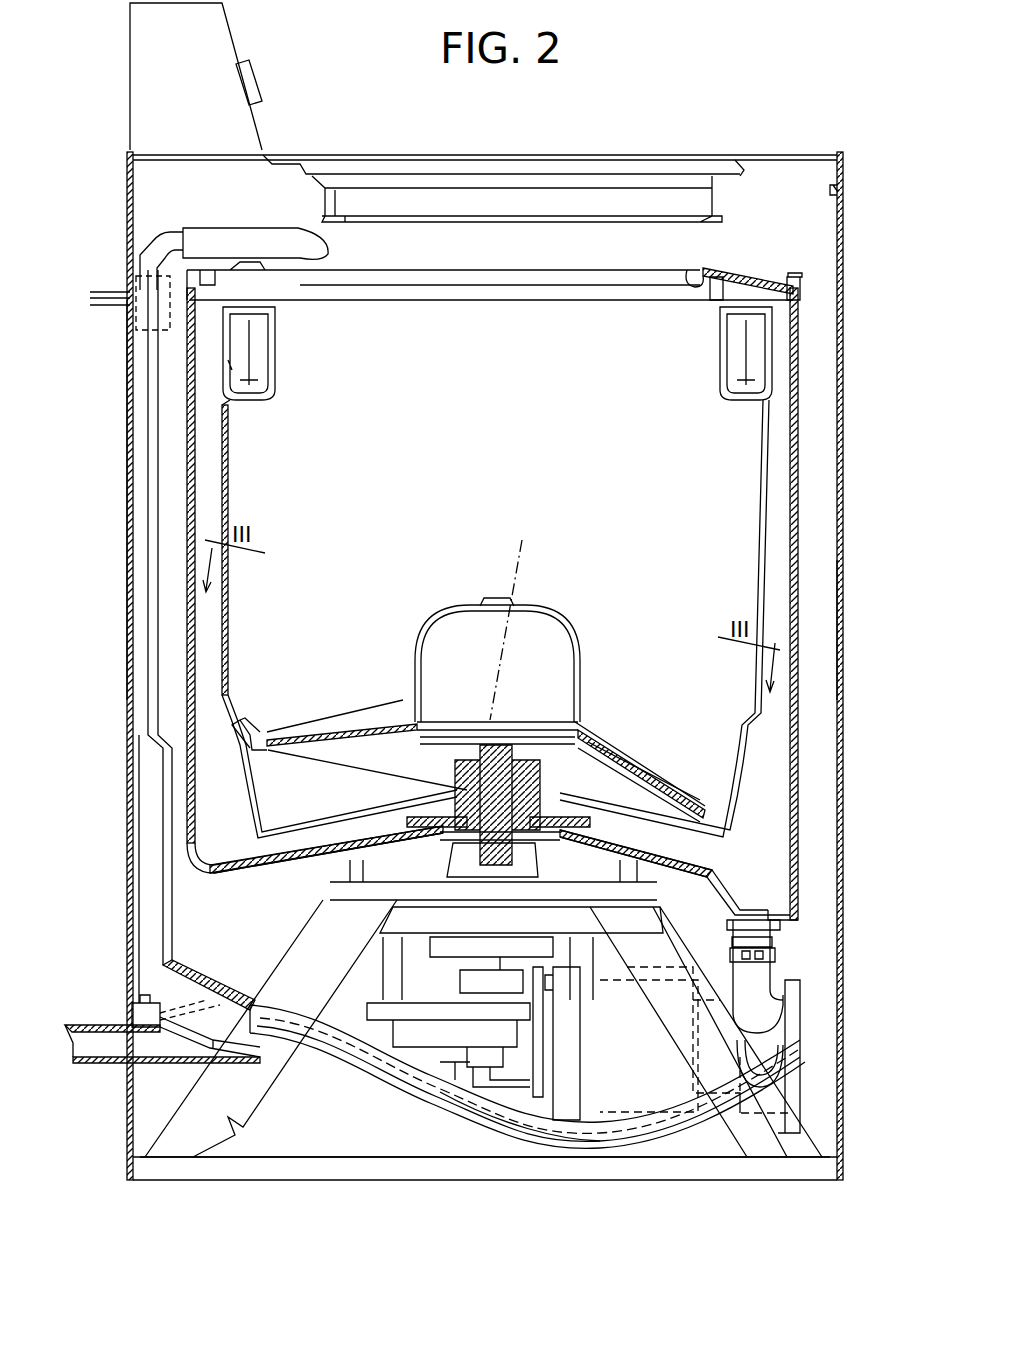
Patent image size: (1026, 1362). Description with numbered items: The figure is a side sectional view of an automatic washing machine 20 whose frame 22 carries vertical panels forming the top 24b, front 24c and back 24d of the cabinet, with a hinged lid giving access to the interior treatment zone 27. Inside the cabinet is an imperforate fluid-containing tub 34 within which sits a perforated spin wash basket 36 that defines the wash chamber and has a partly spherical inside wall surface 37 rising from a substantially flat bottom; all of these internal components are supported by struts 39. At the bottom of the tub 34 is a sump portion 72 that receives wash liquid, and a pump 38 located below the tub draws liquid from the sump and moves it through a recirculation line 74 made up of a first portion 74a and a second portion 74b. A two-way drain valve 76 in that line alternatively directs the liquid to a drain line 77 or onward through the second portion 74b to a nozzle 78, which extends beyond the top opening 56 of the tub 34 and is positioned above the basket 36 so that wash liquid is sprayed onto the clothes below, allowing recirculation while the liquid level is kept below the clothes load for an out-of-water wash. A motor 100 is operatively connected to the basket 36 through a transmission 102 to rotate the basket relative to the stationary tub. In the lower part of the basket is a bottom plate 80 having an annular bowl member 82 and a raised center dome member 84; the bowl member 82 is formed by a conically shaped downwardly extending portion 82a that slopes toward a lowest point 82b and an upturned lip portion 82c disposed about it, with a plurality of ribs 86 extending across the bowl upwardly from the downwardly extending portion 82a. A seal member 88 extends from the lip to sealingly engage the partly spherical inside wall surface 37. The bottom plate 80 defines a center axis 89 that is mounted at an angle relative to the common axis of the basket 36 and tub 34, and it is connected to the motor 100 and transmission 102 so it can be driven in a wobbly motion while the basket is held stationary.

The washing machine 20 is at (871, 196).
The frame 22 is at (262, 1157).
The top 24b is at (810, 156).
The front 24c is at (869, 630).
The back 24d is at (128, 476).
The treatment zone 27 is at (410, 288).
The tub 34 is at (800, 520).
The spin wash basket 36 is at (770, 462).
The partly spherical inside wall surface 37 is at (237, 767).
The pump 38 is at (800, 1058).
The struts 39 is at (292, 946).
The top opening 56 is at (700, 272).
The sump portion 72 is at (785, 906).
The recirculation line 74 is at (347, 1082).
The first portion 74a is at (495, 1130).
The second portion 74b is at (135, 640).
The 2-way drain valve 76 is at (180, 1060).
The drain line 77 is at (92, 1023).
The nozzle 78 is at (283, 235).
The bottom plate 80 is at (468, 700).
The annular bowl member 82 is at (472, 750).
The downwardly extending portion 82a is at (378, 748).
The lowest point 82b is at (268, 758).
The upturned lip portion 82c is at (268, 740).
The raised center dome member 84 is at (560, 632).
The ribs 86 is at (640, 770).
The seal member 88 is at (250, 735).
The center axis 89 is at (525, 560).
The motor 100 is at (650, 1078).
The transmission 102 is at (440, 1070).